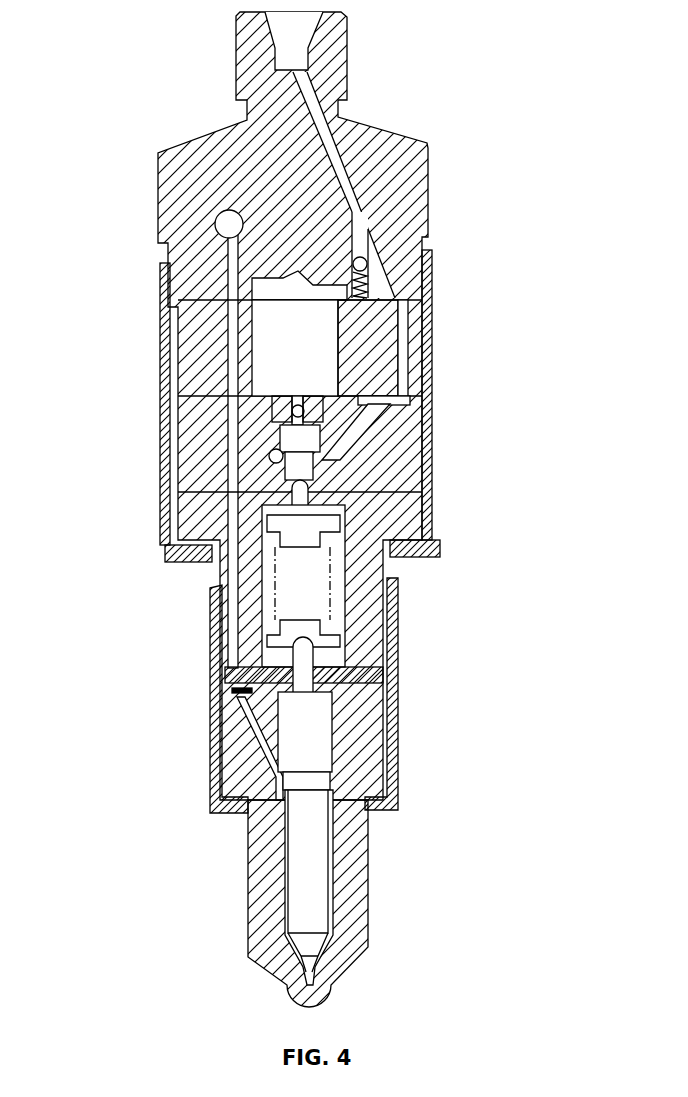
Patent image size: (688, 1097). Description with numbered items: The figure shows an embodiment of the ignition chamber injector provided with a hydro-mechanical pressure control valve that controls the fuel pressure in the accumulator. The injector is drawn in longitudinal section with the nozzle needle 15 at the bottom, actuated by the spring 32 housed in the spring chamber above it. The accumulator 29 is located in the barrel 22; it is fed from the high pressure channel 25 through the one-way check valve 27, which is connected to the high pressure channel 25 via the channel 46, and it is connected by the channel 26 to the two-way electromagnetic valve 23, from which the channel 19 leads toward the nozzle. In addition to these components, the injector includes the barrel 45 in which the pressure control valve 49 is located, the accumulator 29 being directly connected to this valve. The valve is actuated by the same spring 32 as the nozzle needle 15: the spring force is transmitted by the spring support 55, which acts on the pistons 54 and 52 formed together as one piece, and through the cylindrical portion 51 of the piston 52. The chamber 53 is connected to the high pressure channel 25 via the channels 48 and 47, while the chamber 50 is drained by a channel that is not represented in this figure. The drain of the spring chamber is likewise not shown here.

The nozzle needle 15 is at (303, 890).
The channel 19 is at (242, 622).
The barrel 22 is at (190, 373).
The two-way electromagnetic valve 23 is at (215, 222).
The high pressure channel 25 is at (330, 142).
The channel 26 is at (273, 257).
The one-way check valve 27 is at (365, 258).
The accumulator 29 is at (313, 322).
The spring 32 is at (330, 590).
The barrel 45 is at (208, 465).
The channel 46 is at (358, 228).
The channel 47 is at (402, 332).
The channel 48 is at (322, 412).
The pressure control valve 49 is at (305, 418).
The chamber 50 is at (313, 432).
The cylindrical portion 51 is at (302, 445).
The piston 52 is at (340, 452).
The chamber 53 is at (300, 470).
The piston 54 is at (300, 500).
The spring support 55 is at (322, 525).